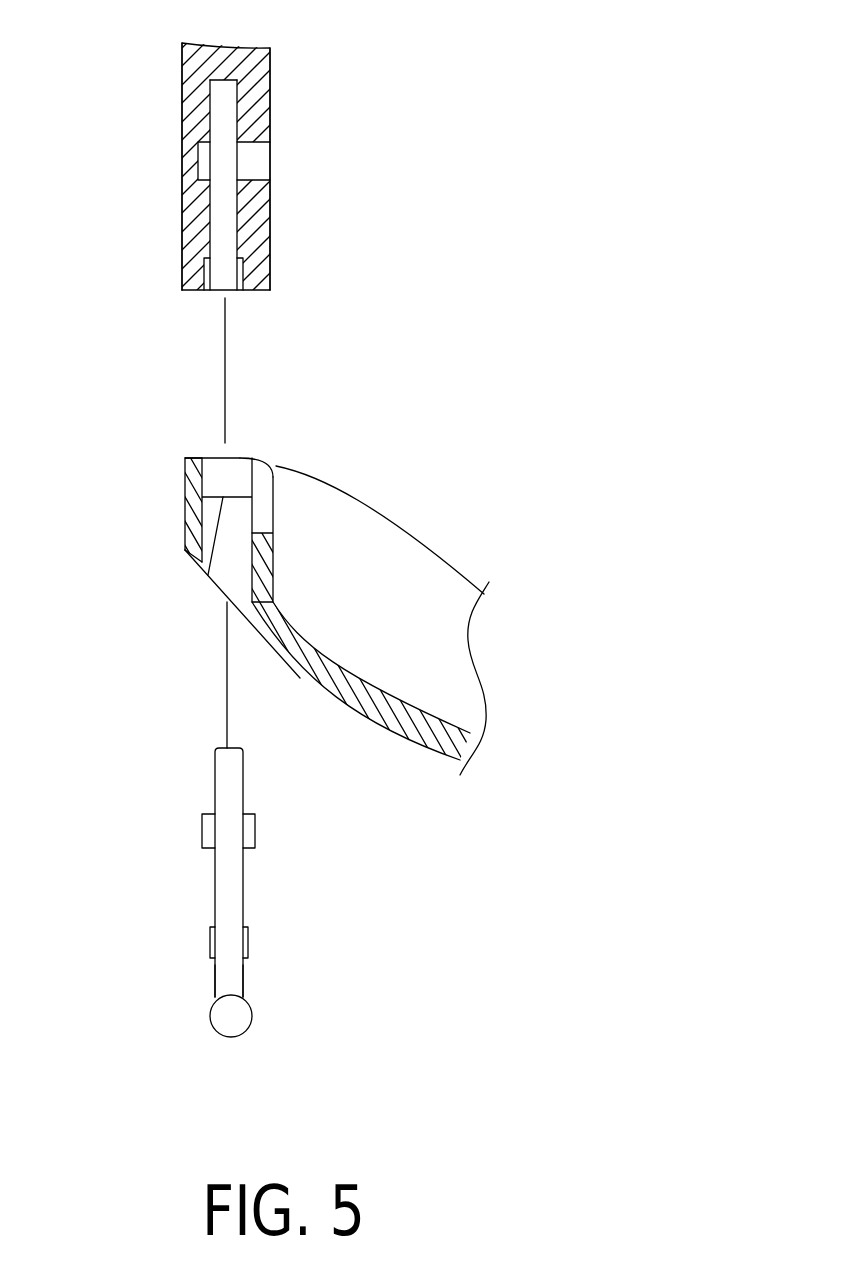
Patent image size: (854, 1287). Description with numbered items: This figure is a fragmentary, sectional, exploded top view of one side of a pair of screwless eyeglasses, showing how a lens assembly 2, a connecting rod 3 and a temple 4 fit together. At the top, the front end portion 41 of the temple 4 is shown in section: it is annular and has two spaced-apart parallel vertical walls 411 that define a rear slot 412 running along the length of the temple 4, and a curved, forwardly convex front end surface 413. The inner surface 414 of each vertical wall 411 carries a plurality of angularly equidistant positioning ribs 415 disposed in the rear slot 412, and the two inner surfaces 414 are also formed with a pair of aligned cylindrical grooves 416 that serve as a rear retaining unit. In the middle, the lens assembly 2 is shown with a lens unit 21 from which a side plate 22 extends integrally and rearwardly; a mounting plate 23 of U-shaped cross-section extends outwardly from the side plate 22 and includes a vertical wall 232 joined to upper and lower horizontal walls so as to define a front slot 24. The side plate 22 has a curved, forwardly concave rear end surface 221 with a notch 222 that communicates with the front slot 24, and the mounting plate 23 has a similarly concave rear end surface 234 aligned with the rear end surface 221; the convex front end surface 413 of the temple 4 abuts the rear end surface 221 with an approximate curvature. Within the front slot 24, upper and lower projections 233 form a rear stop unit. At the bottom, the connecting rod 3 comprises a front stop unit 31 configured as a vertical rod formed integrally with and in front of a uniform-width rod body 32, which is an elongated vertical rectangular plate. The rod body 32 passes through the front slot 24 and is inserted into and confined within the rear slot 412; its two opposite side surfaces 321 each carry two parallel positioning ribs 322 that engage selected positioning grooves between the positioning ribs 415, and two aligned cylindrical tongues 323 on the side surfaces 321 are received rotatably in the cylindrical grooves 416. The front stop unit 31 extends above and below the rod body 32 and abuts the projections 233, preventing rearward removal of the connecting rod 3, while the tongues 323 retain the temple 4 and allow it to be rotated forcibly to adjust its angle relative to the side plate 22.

The lens assembly 2 is at (378, 493).
The lens unit 21 is at (420, 728).
The side plate 22 is at (275, 567).
The mounting plate 23 is at (170, 538).
The front slot 24 is at (223, 582).
The rear end surface 221 is at (268, 462).
The notch 222 is at (270, 503).
The vertical wall 232 is at (231, 472).
The upper and lower projections 233 is at (208, 575).
The rear end surface 234 is at (195, 460).
The connecting rod 3 is at (272, 980).
The front stop unit 31 is at (230, 1022).
The rod body 32 is at (228, 882).
The side surface 321 is at (245, 970).
The positioning rib 322 is at (250, 937).
The cylindrical tongue 323 is at (254, 823).
The temple 4 is at (290, 89).
The front end portion 41 is at (265, 60).
The vertical wall 411 is at (263, 208).
The rear slot 412 is at (220, 133).
The front end surface 413 is at (255, 294).
The inner surface 414 is at (186, 190).
The positioning rib 415 is at (184, 268).
The cylindrical groove 416 is at (245, 157).